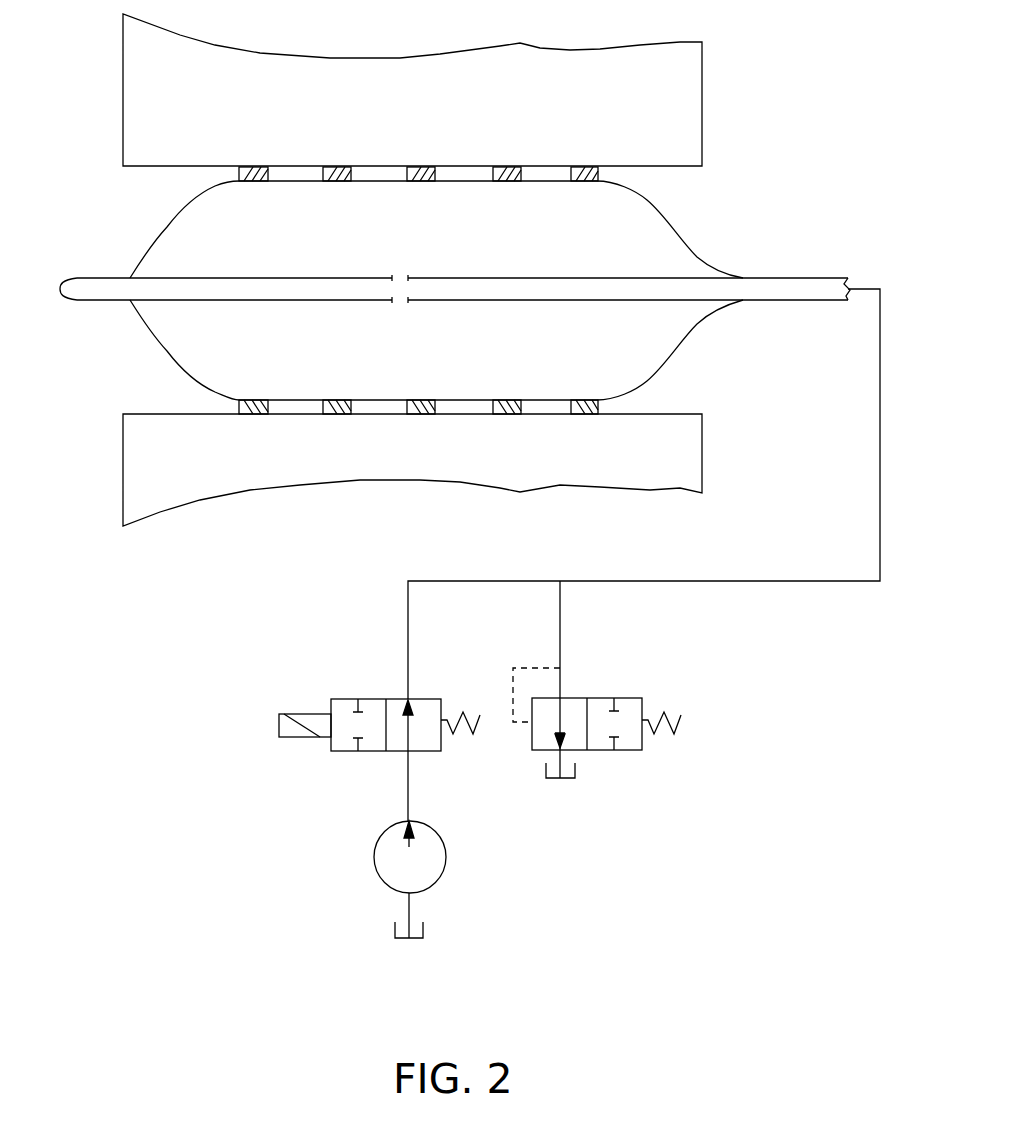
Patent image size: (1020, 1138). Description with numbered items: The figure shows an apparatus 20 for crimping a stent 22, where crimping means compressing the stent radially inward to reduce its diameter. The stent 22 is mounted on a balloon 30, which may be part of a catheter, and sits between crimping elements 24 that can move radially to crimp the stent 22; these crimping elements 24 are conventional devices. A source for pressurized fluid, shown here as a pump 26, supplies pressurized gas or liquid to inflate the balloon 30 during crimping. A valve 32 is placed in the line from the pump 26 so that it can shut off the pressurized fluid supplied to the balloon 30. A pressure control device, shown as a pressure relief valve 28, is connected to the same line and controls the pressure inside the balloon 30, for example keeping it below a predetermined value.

The apparatus 20 is at (798, 130).
The stent 22 is at (237, 173).
The crimping elements 24 is at (430, 82).
The pump 26 is at (385, 853).
The pressure relief valve 28 is at (657, 692).
The balloon 30 is at (667, 355).
The valve 32 is at (322, 698).